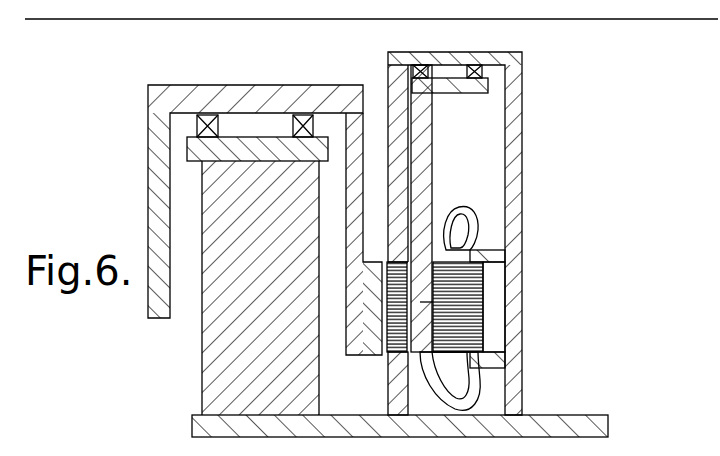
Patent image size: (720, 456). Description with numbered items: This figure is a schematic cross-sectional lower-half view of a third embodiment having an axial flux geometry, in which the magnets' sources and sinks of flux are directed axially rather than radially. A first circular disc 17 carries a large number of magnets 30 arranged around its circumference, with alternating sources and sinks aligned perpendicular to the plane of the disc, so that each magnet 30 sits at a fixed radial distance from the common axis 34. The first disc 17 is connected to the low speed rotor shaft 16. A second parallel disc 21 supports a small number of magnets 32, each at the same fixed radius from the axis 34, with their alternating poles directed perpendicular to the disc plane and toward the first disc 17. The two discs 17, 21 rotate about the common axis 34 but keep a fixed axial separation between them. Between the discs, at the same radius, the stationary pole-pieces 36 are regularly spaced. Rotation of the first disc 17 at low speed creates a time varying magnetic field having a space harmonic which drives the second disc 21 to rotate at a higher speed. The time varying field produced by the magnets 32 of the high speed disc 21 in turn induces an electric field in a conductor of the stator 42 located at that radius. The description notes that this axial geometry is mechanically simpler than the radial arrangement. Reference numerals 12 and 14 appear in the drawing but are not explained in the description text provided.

The rotor 12 is at (214, 397).
The bearing 14 is at (313, 116).
The low speed rotor shaft 16 is at (215, 93).
The first circular disc 17 is at (352, 242).
The second parallel disc 21 is at (470, 305).
The magnets 30 is at (389, 356).
The magnets 32 is at (418, 368).
The common axis 34 is at (661, 20).
The stationary pole-pieces 36 is at (391, 302).
The stator 42 is at (500, 256).